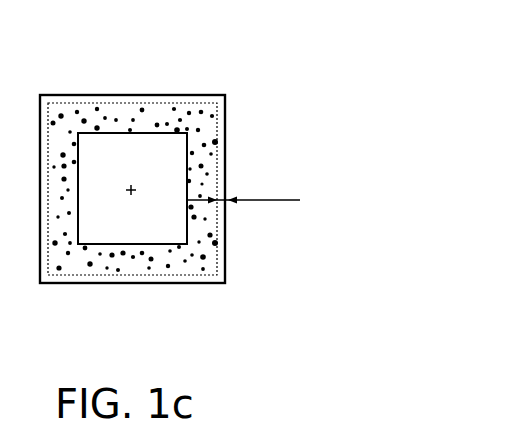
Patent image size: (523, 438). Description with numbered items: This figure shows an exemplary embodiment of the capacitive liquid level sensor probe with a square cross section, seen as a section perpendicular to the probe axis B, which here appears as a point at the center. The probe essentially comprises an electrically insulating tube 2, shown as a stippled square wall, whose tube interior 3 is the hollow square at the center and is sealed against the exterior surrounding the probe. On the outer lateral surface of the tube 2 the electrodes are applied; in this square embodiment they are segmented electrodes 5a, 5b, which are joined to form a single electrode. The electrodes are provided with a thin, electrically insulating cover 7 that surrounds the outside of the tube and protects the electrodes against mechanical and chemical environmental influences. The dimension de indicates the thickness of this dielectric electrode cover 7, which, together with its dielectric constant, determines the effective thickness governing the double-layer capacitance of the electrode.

The electrically insulating tube 2 is at (186, 120).
The tube interior 3 is at (110, 158).
The segmented electrode 5a is at (217, 141).
The segmented electrode 5b is at (217, 244).
The electrode cover 7 is at (173, 278).
The probe axis B is at (131, 190).
The thickness of the dielectric electrode cover de is at (243, 186).